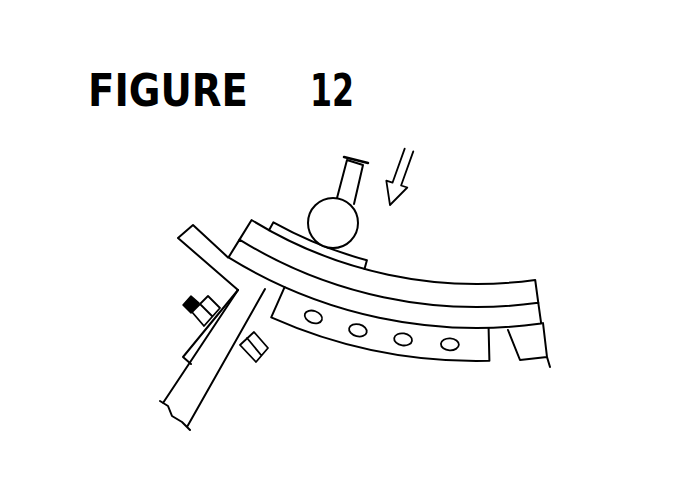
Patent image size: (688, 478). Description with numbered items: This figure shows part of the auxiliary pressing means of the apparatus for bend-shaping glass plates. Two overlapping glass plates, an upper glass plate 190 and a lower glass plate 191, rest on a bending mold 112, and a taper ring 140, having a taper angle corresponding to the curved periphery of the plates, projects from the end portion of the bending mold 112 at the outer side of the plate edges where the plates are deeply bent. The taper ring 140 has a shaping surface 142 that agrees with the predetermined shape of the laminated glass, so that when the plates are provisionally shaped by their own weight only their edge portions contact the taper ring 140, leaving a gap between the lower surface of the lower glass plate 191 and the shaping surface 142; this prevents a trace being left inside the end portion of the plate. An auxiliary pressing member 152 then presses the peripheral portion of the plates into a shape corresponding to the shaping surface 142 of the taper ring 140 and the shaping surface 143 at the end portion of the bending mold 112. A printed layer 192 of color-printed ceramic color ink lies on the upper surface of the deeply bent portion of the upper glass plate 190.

The bending mold 112 is at (383, 342).
The taper ring 140 is at (200, 258).
The shaping surface 142 is at (210, 240).
The shaping surface 143 is at (332, 345).
The auxiliary pressing member 152 is at (330, 222).
The upper glass plate 190 is at (425, 288).
The lower glass plate 191 is at (475, 318).
The printed layer 192 is at (362, 250).